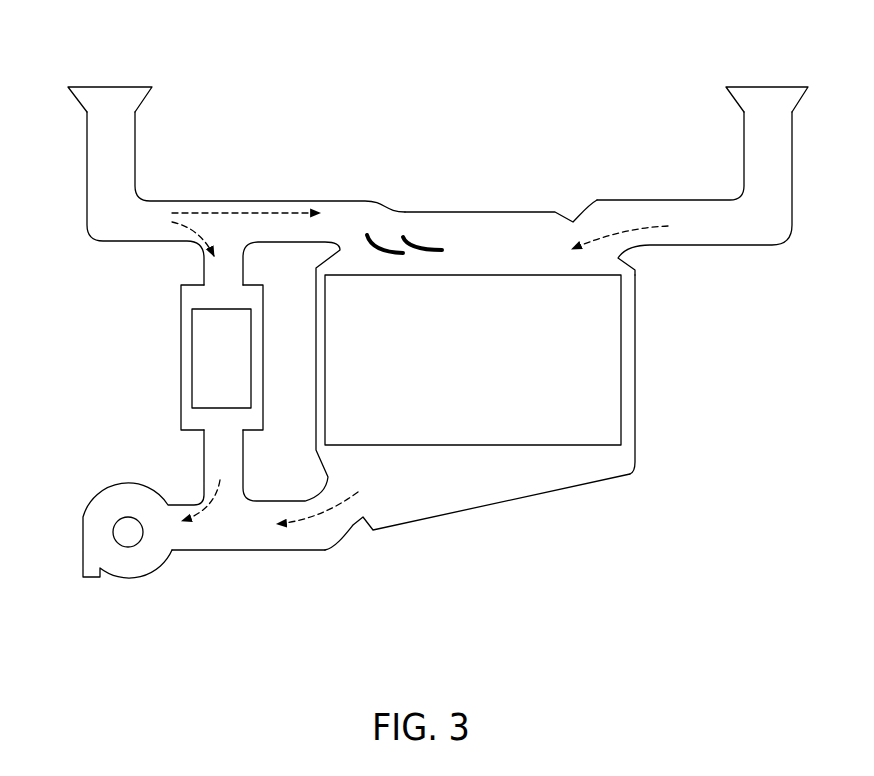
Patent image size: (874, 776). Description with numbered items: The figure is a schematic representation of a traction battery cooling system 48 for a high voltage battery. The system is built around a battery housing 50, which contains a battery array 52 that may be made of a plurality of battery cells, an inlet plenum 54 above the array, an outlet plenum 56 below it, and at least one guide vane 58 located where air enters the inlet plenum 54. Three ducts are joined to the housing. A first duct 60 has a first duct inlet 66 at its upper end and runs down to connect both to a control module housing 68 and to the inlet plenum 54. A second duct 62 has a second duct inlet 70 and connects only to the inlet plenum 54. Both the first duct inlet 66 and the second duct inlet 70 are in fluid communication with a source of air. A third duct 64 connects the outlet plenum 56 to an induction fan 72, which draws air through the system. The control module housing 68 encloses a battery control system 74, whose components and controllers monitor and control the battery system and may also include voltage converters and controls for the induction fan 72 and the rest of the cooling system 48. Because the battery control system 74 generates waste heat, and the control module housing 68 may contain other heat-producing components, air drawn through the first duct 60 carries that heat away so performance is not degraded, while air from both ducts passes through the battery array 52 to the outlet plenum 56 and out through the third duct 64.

The traction battery cooling system 48 is at (121, 308).
The battery housing 50 is at (635, 360).
The battery array 52 is at (621, 428).
The inlet plenum 54 is at (497, 211).
The outlet plenum 56 is at (482, 507).
The guide vane 58 is at (401, 209).
The first duct 60 is at (85, 177).
The second duct 62 is at (792, 175).
The third duct 64 is at (230, 551).
The first duct inlet 66 is at (108, 87).
The control module housing 68 is at (181, 412).
The second duct inlet 70 is at (768, 87).
The induction fan 72 is at (83, 517).
The battery control system 74 is at (192, 355).